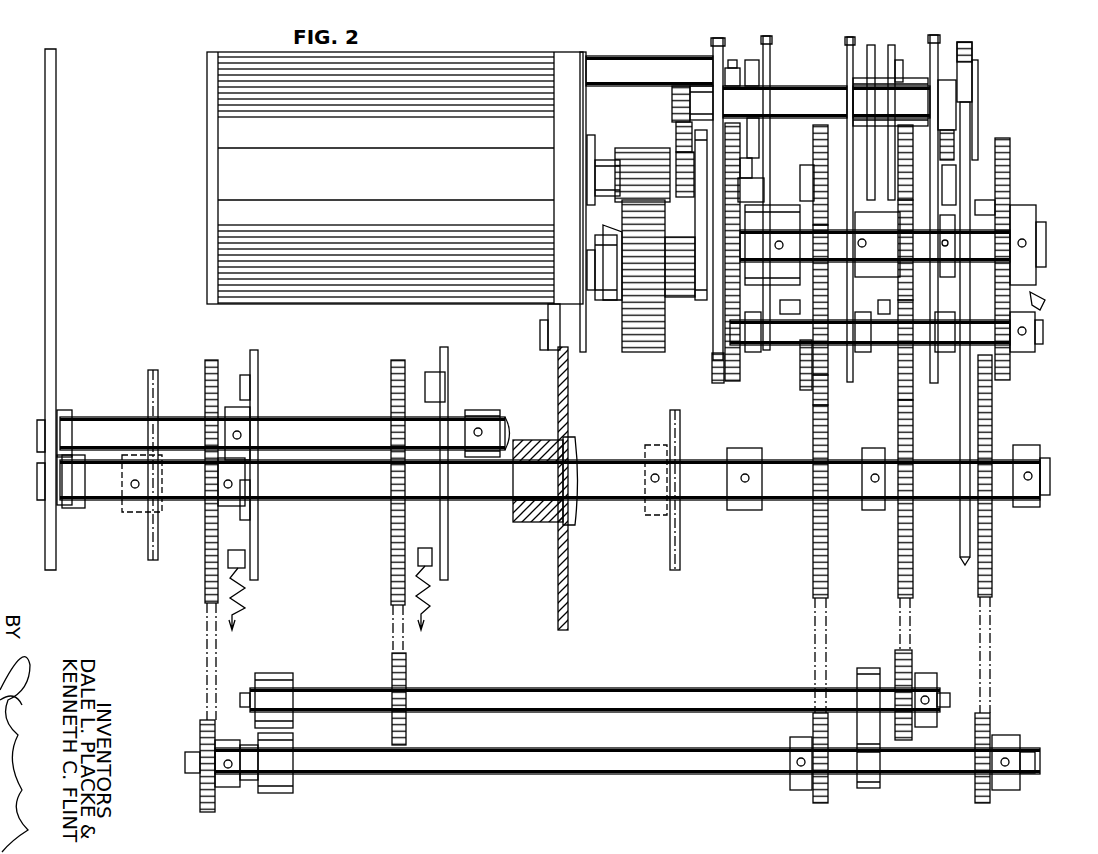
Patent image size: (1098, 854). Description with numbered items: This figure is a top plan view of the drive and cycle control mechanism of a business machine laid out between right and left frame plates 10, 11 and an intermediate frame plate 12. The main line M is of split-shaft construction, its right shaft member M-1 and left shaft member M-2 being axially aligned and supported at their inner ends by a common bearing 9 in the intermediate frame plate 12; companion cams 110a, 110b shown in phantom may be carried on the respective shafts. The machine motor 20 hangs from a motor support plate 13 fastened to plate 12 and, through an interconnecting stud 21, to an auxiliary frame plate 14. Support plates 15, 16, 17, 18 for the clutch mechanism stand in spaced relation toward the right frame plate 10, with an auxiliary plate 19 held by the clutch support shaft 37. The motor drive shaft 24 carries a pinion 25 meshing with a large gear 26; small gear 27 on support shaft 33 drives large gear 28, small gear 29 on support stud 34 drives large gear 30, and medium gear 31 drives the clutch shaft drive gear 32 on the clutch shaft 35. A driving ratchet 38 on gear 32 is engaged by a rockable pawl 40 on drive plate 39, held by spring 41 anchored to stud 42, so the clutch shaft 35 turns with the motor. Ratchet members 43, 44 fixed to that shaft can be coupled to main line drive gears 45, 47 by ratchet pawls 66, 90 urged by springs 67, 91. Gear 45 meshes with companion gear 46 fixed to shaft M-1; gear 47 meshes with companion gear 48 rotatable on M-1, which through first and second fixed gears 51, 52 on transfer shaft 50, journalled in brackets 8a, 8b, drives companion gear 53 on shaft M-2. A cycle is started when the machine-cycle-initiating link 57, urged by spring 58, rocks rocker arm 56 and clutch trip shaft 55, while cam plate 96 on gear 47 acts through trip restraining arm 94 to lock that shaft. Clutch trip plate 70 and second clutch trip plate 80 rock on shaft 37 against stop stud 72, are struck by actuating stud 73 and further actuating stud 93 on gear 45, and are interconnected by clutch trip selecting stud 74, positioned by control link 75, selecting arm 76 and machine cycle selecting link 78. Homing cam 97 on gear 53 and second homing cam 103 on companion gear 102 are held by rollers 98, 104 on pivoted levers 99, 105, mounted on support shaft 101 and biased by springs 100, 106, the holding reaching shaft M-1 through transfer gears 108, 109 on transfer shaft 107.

The bracket 8a is at (875, 790).
The bracket 8b is at (272, 794).
The common bearing 9 is at (530, 440).
The right frame plate 10 is at (975, 72).
The left frame plate 11 is at (44, 122).
The intermediate frame plate 12 is at (566, 615).
The motor support plate 13 is at (582, 52).
The auxiliary frame plate 14 is at (718, 40).
The support plate 15 is at (766, 38).
The support plate 16 is at (848, 40).
The support plate 17 is at (933, 38).
The support plate 18 is at (963, 45).
The auxiliary plate 19 is at (680, 88).
The machine motor 20 is at (207, 158).
The interconnecting stud 21 is at (608, 58).
The motor drive shaft 24 is at (600, 162).
The pinion 25 is at (625, 150).
The large gear 26 is at (630, 352).
The small gear 27 is at (688, 298).
The large gear 28 is at (680, 155).
The small gear 29 is at (703, 300).
The large gear 30 is at (678, 132).
The medium gear 31 is at (734, 62).
The clutch shaft drive gear 32 is at (713, 364).
The support shaft 33 is at (592, 250).
The support stud 34 is at (700, 205).
The clutch shaft 35 is at (1022, 240).
The clutch support shaft 37 is at (792, 87).
The clutch shaft driving ratchet 38 is at (752, 282).
The drive plate 39 is at (742, 372).
The rockable pawl 40 is at (760, 198).
The spring 41 is at (754, 118).
The stud 42 is at (760, 178).
The ratchet member 43 is at (905, 292).
The ratchet member 44 is at (828, 366).
The main line drive gear 45 is at (912, 362).
The companion gear 46 is at (898, 546).
The main line drive gear 47 is at (815, 376).
The companion gear 48 is at (813, 546).
The transfer shaft 50 is at (610, 778).
The first fixed gear 51 is at (820, 804).
The second fixed gear 52 is at (200, 738).
The companion gear 53 is at (205, 582).
The clutch trip shaft 55 is at (1040, 332).
The rocker arm 56 is at (1028, 342).
The machine-cycle-initiating link 57 is at (1036, 290).
The spring 58 is at (1045, 302).
The ratchet pawl 66 is at (957, 192).
The spring 67 is at (1012, 159).
The clutch trip plate 70 is at (897, 80).
The stop stud 72 is at (868, 45).
The actuating stud 73 is at (913, 150).
The clutch trip selecting stud 74 is at (855, 86).
The control link 75 is at (952, 92).
The selecting arm 76 is at (990, 212).
The machine cycle selecting link 78 is at (947, 130).
The second clutch trip plate 80 is at (889, 62).
The ratchet pawl 90 is at (815, 186).
The spring 91 is at (832, 165).
The further actuating stud 93 is at (885, 288).
The trip restraining arm 94 is at (806, 300).
The cam plate 96 is at (810, 356).
The homing cam 97 is at (252, 520).
The roller 98 is at (250, 372).
The pivoted lever 99 is at (250, 556).
The spring 100 is at (246, 600).
The support shaft 101 is at (103, 420).
The companion gear 102 is at (392, 566).
The second homing cam 103 is at (432, 520).
The roller 104 is at (440, 372).
The pivoted lever 105 is at (440, 562).
The spring 106 is at (428, 606).
The transfer shaft 107 is at (630, 688).
The transfer gear 108 is at (392, 722).
The transfer gear 109 is at (895, 660).
The companion cam 110a is at (668, 540).
The companion cam 110b is at (150, 530).
The main line M is at (584, 506).
The right shaft member M-1 is at (678, 502).
The left shaft member M-2 is at (196, 506).